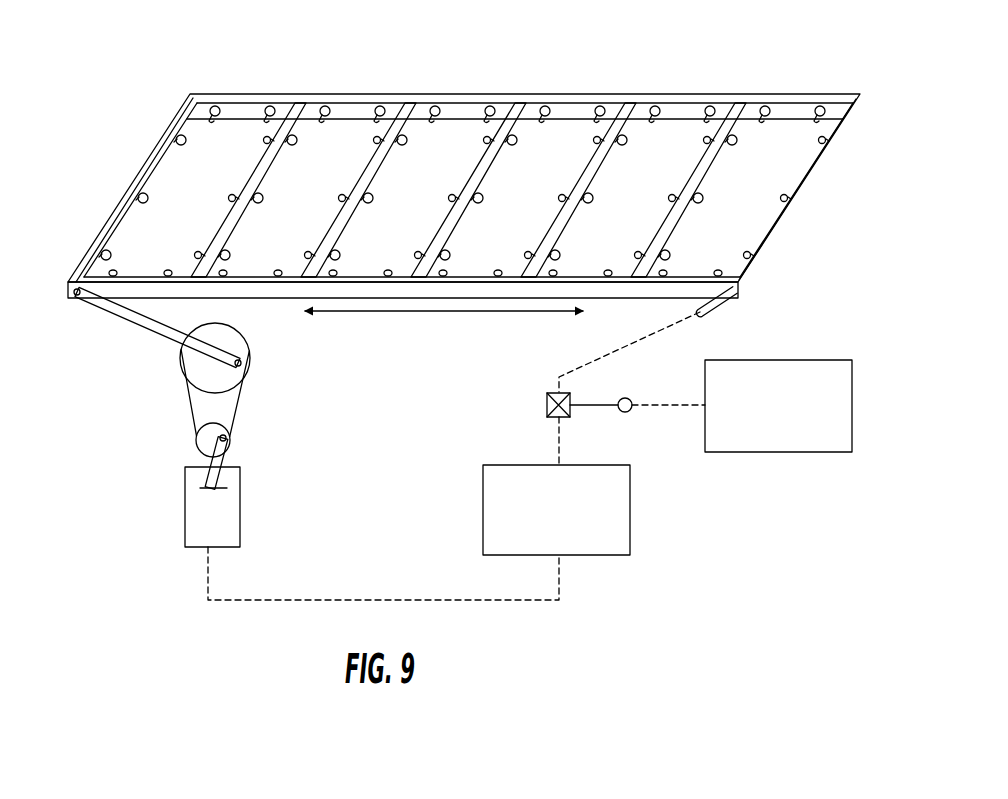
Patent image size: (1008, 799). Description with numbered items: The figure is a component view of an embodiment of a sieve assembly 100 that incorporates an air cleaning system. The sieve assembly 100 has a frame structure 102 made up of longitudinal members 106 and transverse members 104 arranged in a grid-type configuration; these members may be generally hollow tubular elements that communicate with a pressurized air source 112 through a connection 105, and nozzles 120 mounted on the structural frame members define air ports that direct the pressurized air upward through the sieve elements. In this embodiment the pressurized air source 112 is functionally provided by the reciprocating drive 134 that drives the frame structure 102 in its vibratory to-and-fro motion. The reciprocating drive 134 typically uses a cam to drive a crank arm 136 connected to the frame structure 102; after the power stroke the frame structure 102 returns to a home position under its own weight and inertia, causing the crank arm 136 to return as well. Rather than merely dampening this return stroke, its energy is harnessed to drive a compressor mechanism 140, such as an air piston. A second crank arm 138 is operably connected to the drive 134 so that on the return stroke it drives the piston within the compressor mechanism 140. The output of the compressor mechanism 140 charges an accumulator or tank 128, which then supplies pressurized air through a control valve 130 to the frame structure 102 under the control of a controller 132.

The sieve assembly 100 is at (464, 149).
The frame structure 102 is at (242, 90).
The transverse members 104 is at (713, 160).
The connection 105 is at (718, 308).
The longitudinal members 106 is at (357, 95).
The pressurized air source 112 is at (216, 417).
The nozzles 120 is at (508, 138).
The accumulator or tank 128 is at (585, 555).
The control valve 130 is at (545, 405).
The controller 132 is at (757, 453).
The reciprocating drive 134 is at (265, 377).
The crank arm 136 is at (135, 325).
The second crank arm 138 is at (233, 480).
The compressor mechanism 140 is at (242, 517).